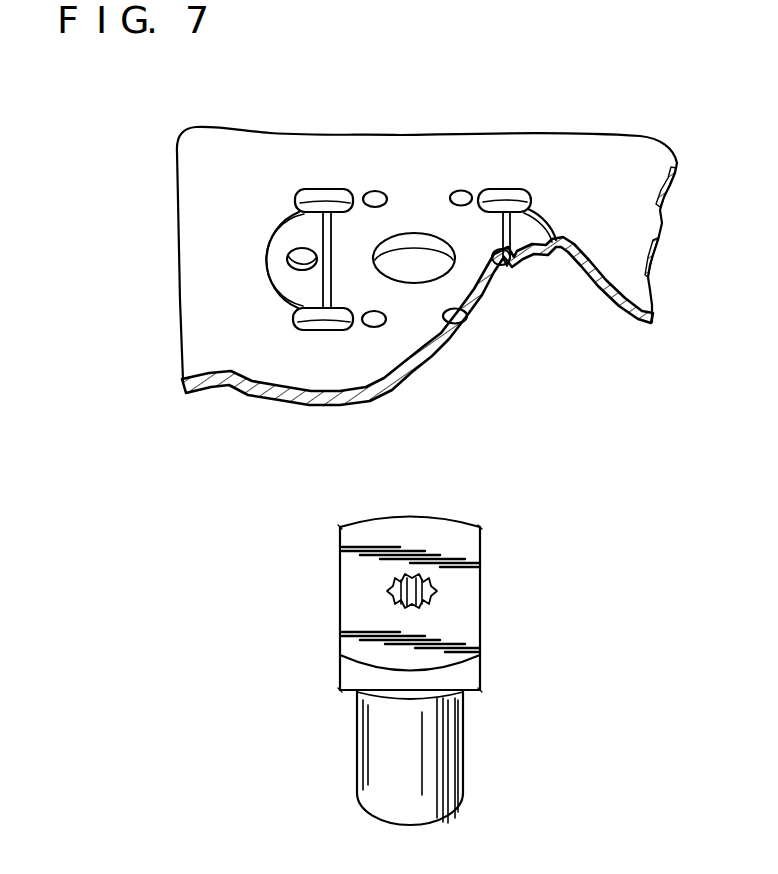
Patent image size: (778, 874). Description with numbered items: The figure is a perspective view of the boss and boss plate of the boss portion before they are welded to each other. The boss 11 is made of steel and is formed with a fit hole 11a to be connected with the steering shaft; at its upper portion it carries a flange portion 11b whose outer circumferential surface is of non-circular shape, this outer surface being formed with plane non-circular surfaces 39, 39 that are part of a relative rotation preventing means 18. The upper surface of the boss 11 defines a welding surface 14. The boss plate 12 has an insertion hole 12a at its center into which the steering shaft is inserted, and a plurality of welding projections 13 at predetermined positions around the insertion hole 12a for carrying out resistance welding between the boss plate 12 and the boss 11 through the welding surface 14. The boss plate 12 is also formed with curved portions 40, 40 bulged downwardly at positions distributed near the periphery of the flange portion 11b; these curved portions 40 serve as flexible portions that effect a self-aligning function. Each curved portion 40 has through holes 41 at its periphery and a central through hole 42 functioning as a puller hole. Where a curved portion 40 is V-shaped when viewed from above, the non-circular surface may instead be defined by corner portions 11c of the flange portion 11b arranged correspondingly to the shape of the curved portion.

The boss 11 is at (425, 647).
The fit hole 11a is at (387, 591).
The flange portion 11b is at (468, 664).
The corner portions 11c is at (340, 527).
The boss plate 12 is at (627, 163).
The insertion hole 12a is at (415, 242).
The welding projections 13 is at (372, 191).
The welding surface 14 is at (455, 588).
The relative rotation preventing means 18 is at (278, 208).
The non-circular surfaces 39 is at (340, 628).
The curved portions 40 is at (300, 285).
The through holes 41 is at (310, 195).
The through hole 42 is at (290, 255).